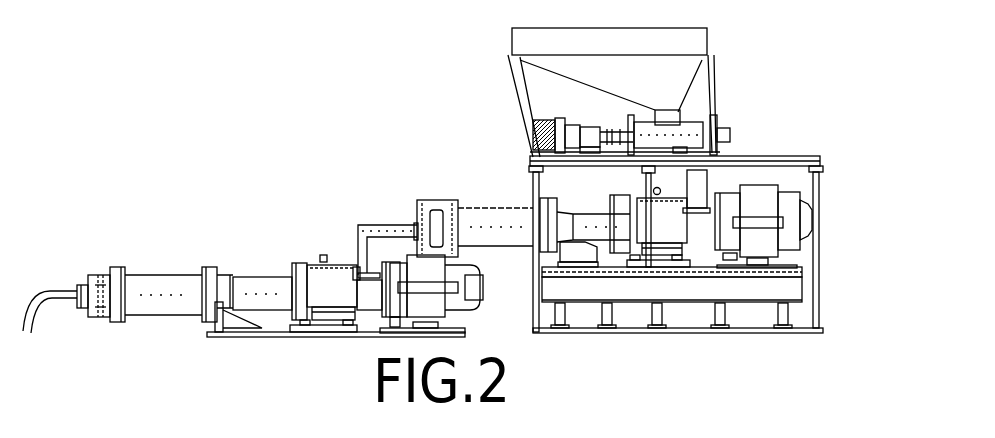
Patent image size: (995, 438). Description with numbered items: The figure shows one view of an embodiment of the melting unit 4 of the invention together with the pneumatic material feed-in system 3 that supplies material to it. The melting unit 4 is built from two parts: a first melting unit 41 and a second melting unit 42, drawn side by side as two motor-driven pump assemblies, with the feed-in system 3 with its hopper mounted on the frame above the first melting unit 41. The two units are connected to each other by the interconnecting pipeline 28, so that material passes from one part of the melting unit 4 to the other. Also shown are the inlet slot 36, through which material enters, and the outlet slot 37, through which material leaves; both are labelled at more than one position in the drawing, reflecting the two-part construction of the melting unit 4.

The pneumatic material feed-in system 3 is at (518, 91).
The melting unit 4 is at (368, 123).
The interconnecting pipeline 28 is at (383, 227).
The inlet slot 36 is at (357, 262).
The outlet slot 37 is at (82, 287).
The first melting unit 41 is at (530, 190).
The second melting unit 42 is at (316, 248).